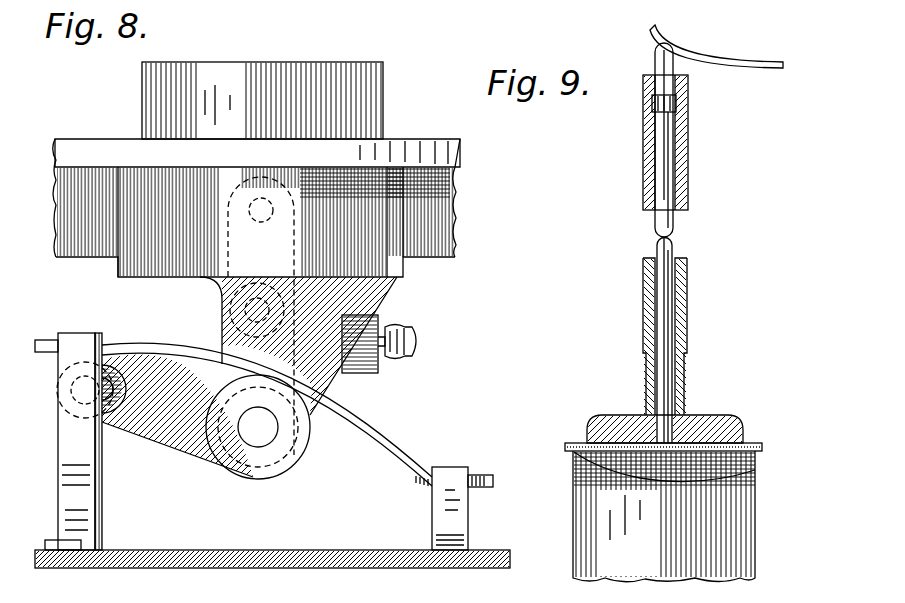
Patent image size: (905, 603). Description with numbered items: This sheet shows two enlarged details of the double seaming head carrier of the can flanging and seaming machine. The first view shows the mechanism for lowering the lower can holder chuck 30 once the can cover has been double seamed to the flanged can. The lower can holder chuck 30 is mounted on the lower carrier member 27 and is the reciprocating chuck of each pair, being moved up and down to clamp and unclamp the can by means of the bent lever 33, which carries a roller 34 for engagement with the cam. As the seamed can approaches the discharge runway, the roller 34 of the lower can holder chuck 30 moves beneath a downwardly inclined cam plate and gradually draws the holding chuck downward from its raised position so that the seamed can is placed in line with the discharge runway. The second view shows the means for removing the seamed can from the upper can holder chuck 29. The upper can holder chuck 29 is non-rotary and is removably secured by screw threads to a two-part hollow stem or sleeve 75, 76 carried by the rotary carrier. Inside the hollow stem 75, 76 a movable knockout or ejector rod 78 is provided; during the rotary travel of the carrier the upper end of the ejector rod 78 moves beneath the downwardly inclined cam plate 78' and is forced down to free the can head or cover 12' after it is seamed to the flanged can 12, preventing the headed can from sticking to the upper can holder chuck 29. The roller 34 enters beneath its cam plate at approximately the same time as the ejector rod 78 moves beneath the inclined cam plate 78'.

In FIG. 9, the flanged can 12 is at (664, 516).
In FIG. 9, the can head or cover 12' is at (663, 417).
In FIG. 8, the lower carrier member 27 is at (266, 550).
In FIG. 9, the upper can holder chuck 29 is at (732, 432).
In FIG. 8, the lower can holder chuck 30 is at (262, 100).
In FIG. 8, the bent lever 33 is at (177, 416).
In FIG. 8, the roller 34 is at (283, 467).
In FIG. 9, the hollow stem or sleeve 75 is at (688, 380).
In FIG. 9, the hollow stem or sleeve 76 is at (643, 150).
In FIG. 9, the ejector rod 78 is at (633, 243).
In FIG. 9, the inclined cam plate 78' is at (716, 45).